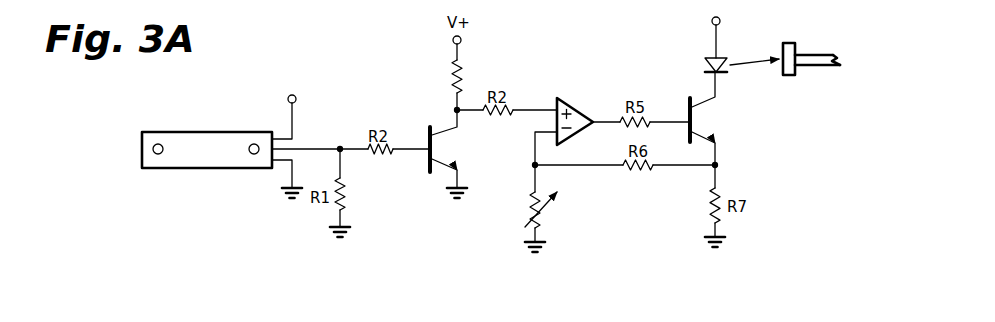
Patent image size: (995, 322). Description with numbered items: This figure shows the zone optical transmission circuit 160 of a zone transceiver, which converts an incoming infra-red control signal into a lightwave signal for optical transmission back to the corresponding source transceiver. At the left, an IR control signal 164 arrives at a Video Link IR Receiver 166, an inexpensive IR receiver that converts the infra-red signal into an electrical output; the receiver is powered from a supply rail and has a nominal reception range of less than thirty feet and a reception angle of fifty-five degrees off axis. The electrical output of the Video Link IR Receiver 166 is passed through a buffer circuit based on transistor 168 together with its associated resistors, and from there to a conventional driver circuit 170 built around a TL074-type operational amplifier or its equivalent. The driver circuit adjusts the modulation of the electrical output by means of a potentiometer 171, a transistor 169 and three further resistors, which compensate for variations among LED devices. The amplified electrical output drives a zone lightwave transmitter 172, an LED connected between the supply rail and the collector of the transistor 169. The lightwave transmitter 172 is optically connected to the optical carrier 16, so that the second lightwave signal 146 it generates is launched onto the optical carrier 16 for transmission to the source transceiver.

The zone optical transmission circuit 160 is at (167, 94).
The IR control signal 164 is at (132, 150).
The Video Link IR Receiver 166 is at (203, 131).
The transistor 168 is at (447, 150).
The driver circuit 170 is at (573, 105).
The potentiometer 171 is at (527, 203).
The transistor 169 is at (708, 121).
The zone lightwave transmitter 172 is at (707, 72).
The second lightwave signal 146 is at (750, 56).
The optical carrier 16 is at (792, 76).